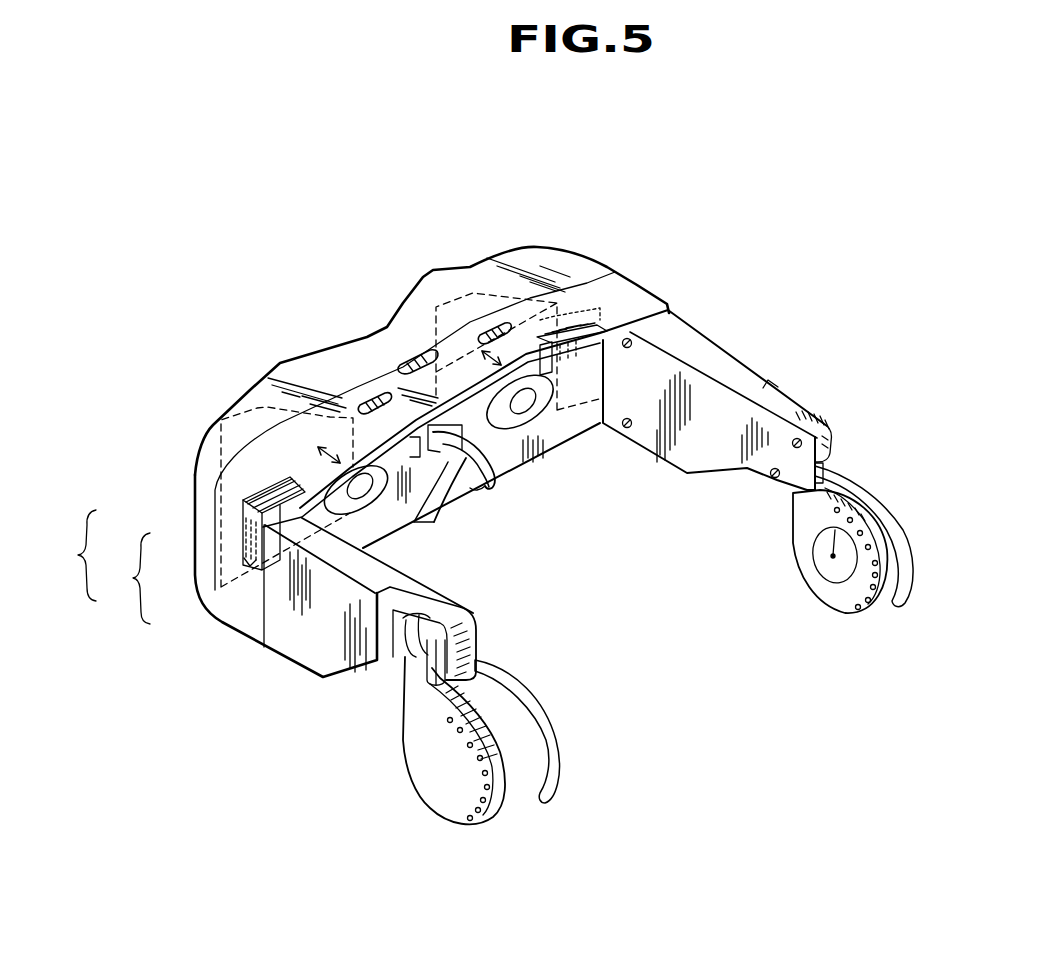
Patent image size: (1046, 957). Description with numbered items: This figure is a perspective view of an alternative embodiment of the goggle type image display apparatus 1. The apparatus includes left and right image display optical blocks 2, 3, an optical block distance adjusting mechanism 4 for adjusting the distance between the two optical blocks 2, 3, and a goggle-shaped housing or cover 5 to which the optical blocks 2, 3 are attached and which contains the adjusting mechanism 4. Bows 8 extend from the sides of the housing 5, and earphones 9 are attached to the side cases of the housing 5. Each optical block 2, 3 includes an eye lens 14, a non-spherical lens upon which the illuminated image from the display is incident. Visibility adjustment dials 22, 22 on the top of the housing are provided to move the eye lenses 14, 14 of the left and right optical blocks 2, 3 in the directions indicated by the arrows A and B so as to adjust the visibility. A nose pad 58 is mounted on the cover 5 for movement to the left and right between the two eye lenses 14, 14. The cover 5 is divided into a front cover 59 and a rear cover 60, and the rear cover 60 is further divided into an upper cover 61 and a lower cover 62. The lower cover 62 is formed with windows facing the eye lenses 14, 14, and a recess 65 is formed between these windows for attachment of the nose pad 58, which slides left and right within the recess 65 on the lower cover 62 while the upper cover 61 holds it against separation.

The goggle type image display apparatus 1 is at (266, 366).
The left image display optical block 2 is at (247, 490).
The right image display optical block 3 is at (577, 325).
The optical block distance adjusting mechanism 4 is at (425, 357).
The goggle-shaped housing (cover) 5 is at (181, 550).
The bows 8 is at (548, 718).
The earphones 9 is at (430, 785).
The eye lens 14 is at (378, 503).
The visibility adjustment dial 22 is at (367, 397).
The nose pad 58 is at (485, 489).
The front cover 59 is at (196, 501).
The rear cover 60 is at (122, 578).
The upper cover 61 is at (262, 500).
The lower cover 62 is at (228, 604).
The recess 65 is at (483, 452).